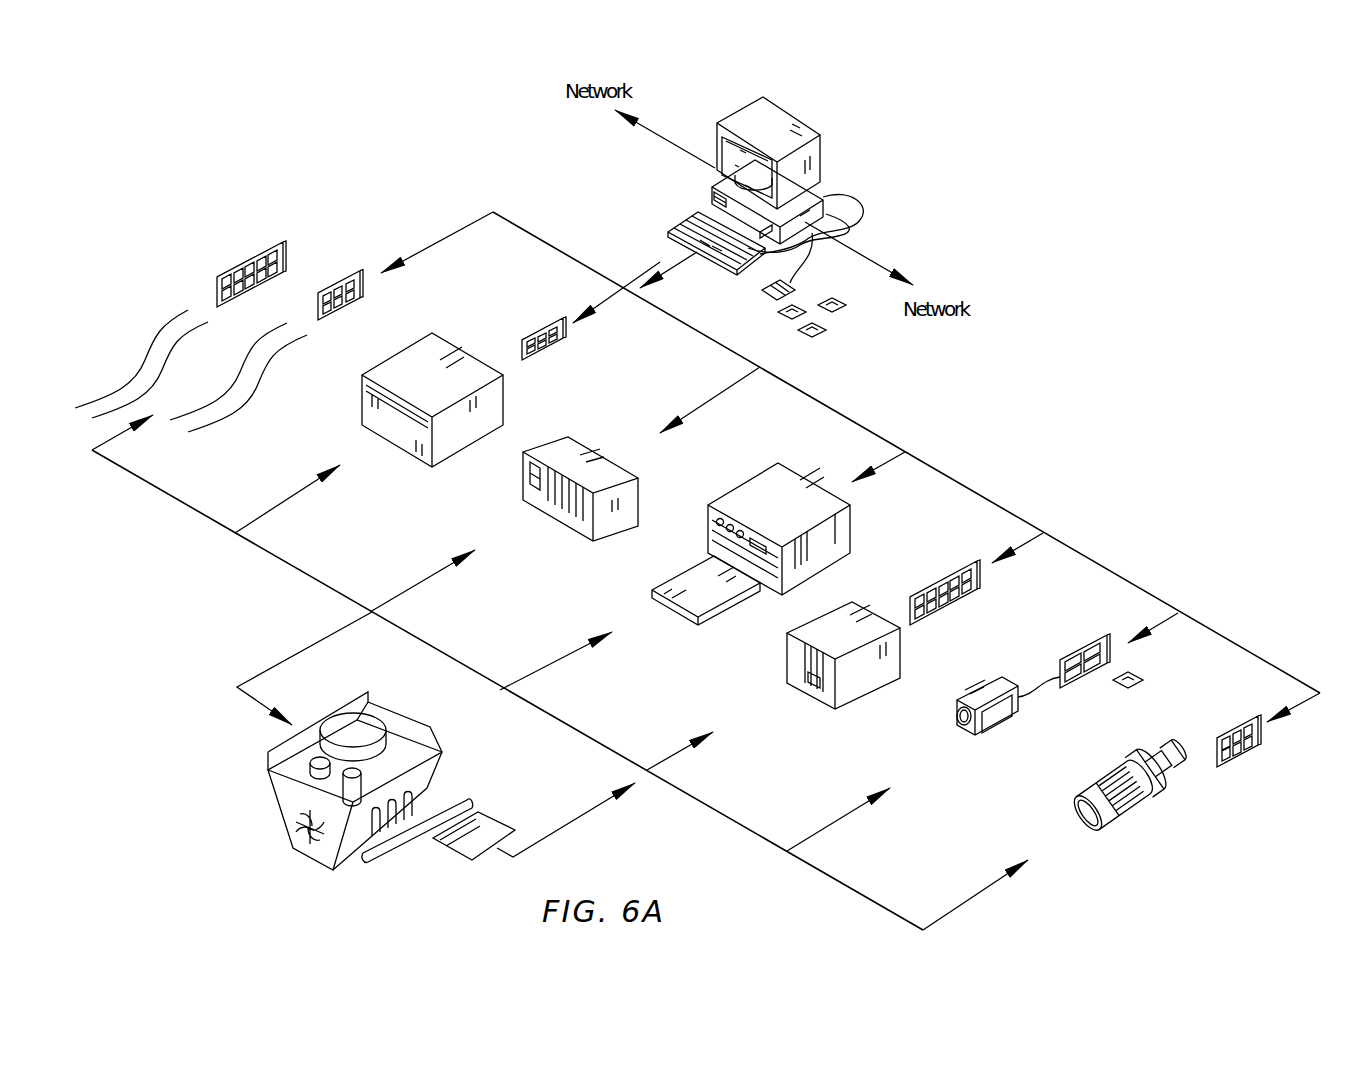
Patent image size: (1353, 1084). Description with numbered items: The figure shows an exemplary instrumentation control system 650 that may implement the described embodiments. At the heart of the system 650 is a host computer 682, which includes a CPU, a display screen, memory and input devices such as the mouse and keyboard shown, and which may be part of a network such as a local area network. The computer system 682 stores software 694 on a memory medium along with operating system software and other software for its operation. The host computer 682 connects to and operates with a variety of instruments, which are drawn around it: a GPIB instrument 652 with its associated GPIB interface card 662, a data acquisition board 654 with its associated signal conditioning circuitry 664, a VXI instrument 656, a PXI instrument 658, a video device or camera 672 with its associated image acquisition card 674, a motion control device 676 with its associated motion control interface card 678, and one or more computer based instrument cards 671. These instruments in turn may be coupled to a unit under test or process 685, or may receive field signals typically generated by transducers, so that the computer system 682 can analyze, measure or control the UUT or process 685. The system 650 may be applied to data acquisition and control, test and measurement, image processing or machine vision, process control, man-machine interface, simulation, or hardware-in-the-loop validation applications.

The instrumentation control system 650 is at (1065, 248).
The host computer 682 is at (787, 122).
The software 694 is at (818, 333).
The computer based instrument cards 671 is at (232, 272).
The GPIB instrument 652 is at (400, 366).
The GPIB interface card 662 is at (532, 333).
The PXI instrument 658 is at (588, 457).
The VXI instrument 656 is at (747, 498).
The signal conditioning circuitry 664 is at (800, 663).
The data acquisition board 654 is at (945, 582).
The image acquisition card 674 is at (1078, 680).
The video device or camera 672 is at (998, 713).
The motion control interface card 678 is at (1242, 757).
The motion control device 676 is at (1127, 815).
The unit under test or process 685 is at (282, 793).